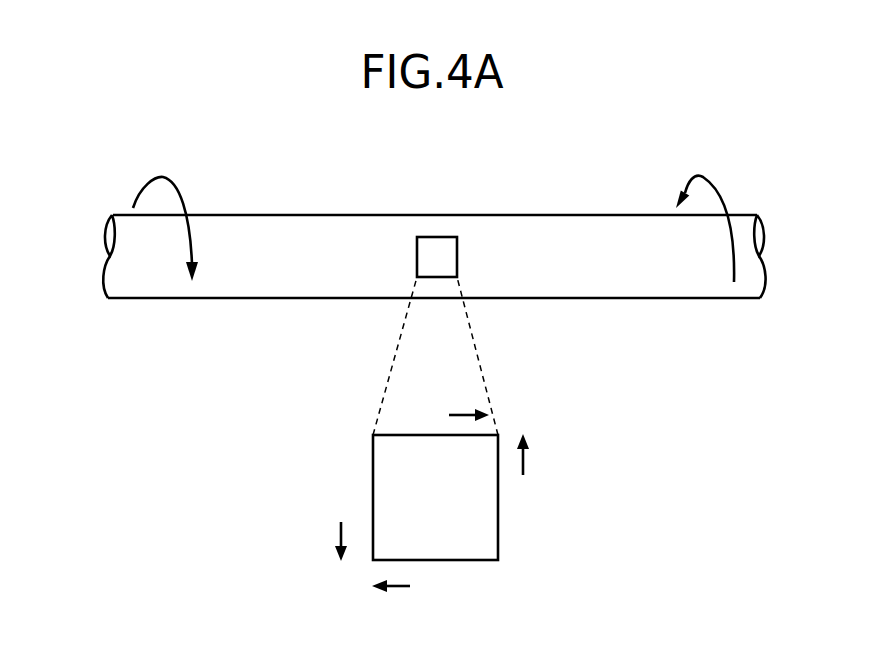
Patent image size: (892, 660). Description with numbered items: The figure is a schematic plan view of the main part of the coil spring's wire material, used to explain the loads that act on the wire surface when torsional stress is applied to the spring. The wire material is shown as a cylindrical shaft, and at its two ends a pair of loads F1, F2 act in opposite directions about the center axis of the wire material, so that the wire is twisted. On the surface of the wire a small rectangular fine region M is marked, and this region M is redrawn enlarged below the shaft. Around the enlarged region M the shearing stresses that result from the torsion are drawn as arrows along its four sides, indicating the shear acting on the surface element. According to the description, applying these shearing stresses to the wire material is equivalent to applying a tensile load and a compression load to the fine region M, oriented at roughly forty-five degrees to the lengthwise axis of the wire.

The load F1 is at (704, 177).
The load F2 is at (162, 177).
The rectangular fine region M is at (437, 237).